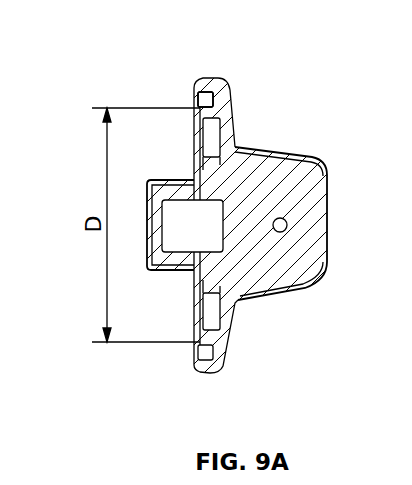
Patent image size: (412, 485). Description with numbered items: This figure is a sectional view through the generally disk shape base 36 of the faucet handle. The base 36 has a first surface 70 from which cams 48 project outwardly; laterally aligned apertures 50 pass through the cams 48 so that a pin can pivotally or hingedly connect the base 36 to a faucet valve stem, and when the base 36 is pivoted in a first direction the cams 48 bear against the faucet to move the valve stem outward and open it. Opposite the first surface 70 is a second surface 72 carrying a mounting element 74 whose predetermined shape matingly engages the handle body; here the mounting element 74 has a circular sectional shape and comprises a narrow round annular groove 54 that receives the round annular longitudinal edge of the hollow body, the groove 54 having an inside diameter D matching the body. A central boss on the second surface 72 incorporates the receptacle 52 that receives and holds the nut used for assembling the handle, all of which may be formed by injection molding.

The base 36 is at (288, 155).
The cams 48 is at (290, 293).
The apertures 50 is at (288, 220).
The receptacle 52 is at (192, 237).
The annular groove 54 is at (195, 358).
The first surface 70 is at (234, 142).
The second surface 72 is at (194, 97).
The mounting element 74 is at (194, 97).